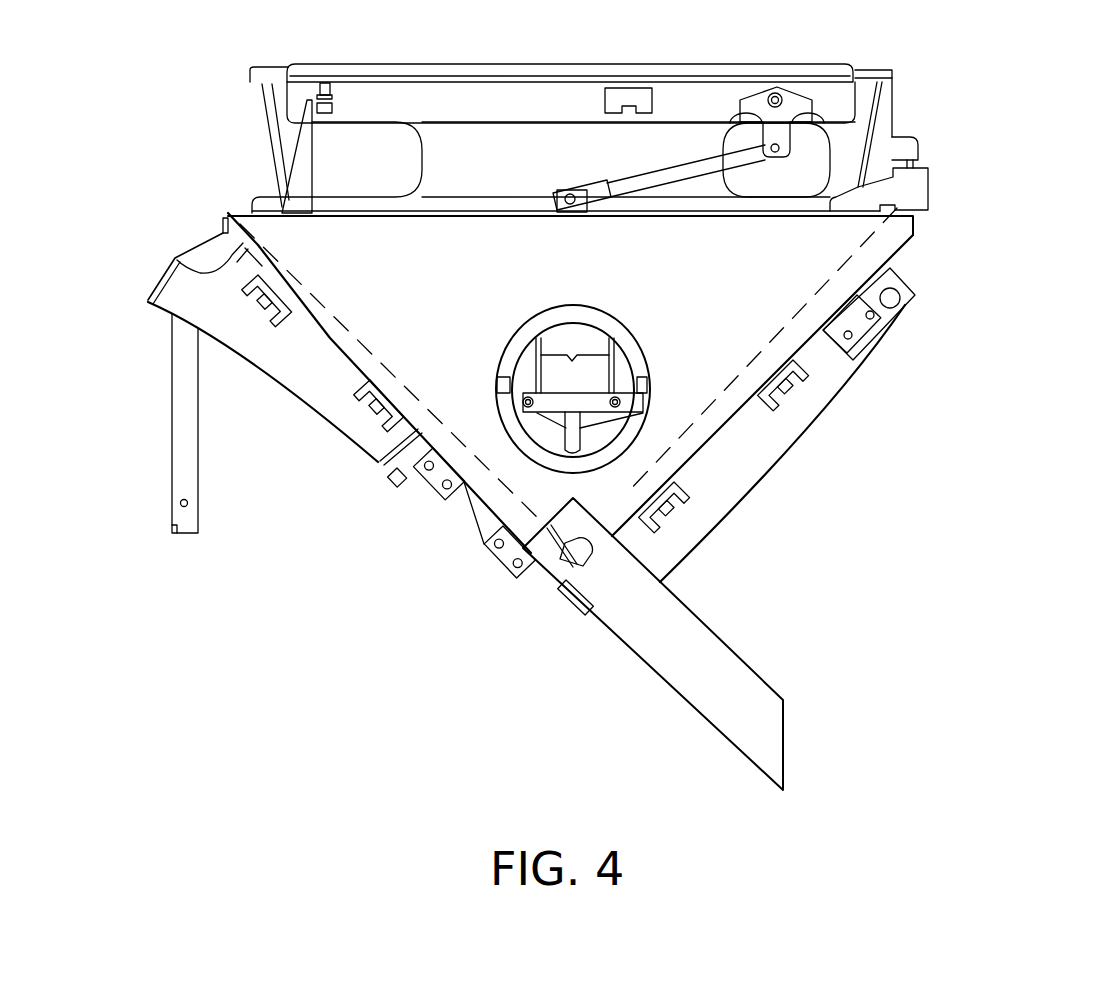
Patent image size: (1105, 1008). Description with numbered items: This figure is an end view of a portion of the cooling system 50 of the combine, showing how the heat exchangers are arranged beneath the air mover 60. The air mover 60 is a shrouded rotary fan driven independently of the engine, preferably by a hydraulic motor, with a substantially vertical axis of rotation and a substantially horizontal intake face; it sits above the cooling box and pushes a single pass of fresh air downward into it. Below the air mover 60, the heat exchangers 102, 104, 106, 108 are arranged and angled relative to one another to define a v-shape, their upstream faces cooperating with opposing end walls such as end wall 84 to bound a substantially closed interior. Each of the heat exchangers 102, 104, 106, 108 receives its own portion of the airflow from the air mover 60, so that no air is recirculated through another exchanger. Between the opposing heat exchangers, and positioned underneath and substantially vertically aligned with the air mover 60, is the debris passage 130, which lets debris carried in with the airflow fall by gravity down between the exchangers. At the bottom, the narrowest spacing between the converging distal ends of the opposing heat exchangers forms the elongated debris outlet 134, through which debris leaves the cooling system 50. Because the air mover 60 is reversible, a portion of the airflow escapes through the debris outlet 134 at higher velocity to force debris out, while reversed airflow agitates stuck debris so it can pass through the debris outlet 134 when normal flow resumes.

The cooling system 50 is at (980, 110).
The air mover 60 is at (165, 89).
The end wall 84 is at (444, 302).
The heat exchanger 102 is at (767, 453).
The heat exchanger 104 is at (295, 377).
The heat exchanger 106 is at (896, 308).
The heat exchanger 108 is at (470, 512).
The debris passage 130 is at (600, 479).
The debris outlet 134 is at (568, 562).